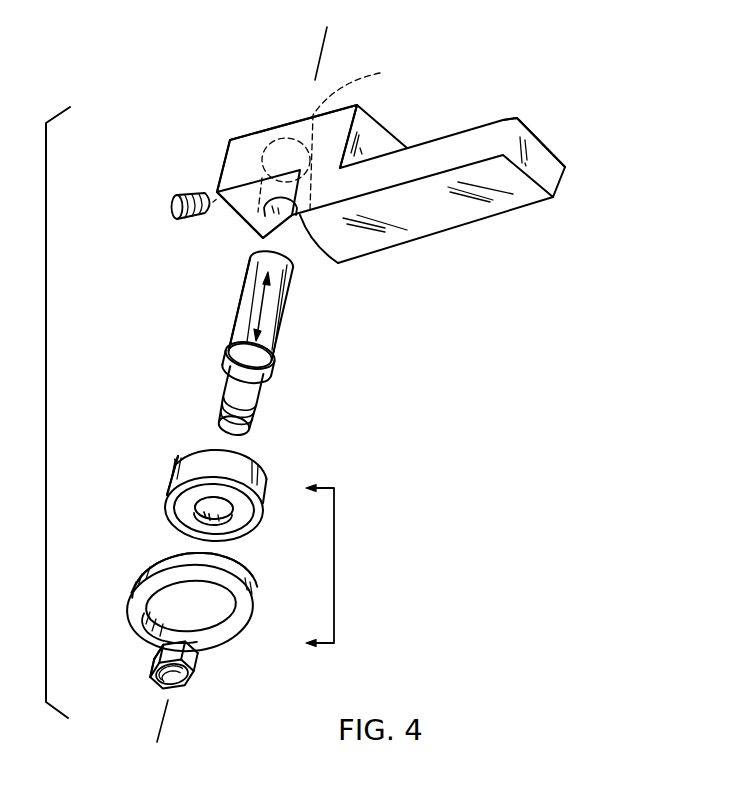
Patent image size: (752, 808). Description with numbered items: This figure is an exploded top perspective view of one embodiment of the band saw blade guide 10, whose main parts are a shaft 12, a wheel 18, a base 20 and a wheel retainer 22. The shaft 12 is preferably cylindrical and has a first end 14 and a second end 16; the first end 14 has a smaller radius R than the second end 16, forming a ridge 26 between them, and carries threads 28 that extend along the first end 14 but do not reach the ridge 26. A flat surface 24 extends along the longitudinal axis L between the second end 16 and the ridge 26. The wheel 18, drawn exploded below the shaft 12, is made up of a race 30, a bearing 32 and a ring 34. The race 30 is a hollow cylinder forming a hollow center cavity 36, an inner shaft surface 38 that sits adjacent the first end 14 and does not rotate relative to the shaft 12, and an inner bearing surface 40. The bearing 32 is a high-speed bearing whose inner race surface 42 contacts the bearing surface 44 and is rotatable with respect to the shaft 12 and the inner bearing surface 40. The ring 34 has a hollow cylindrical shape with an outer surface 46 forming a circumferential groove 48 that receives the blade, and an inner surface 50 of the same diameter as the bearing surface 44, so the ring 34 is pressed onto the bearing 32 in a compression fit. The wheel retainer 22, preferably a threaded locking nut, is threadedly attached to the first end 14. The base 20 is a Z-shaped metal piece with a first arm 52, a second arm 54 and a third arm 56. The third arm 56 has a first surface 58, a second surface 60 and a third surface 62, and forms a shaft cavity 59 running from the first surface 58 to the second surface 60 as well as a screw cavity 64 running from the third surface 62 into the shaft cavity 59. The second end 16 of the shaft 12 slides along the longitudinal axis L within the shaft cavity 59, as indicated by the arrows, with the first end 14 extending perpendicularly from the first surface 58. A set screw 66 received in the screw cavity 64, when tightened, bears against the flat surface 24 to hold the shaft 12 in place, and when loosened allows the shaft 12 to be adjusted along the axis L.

The band saw blade guide 10 is at (483, 97).
The shaft 12 is at (285, 330).
The first end 14 is at (250, 422).
The second end 16 is at (250, 250).
The wheel 18 is at (337, 568).
The base 20 is at (467, 225).
The wheel retainer 22 is at (193, 683).
The flat surface 24 is at (237, 302).
The ridge 26 is at (277, 368).
The threads 28 is at (220, 403).
The race 30 is at (200, 505).
The bearing 32 is at (193, 490).
The ring 34 is at (242, 637).
The hollow center cavity 36 is at (262, 481).
The inner shaft surface 38 is at (180, 527).
The inner bearing surface 40 is at (233, 527).
The inner race surface 42 is at (237, 510).
The bearing surface 44 is at (197, 462).
The outer surface 46 is at (242, 577).
The groove 48 is at (147, 567).
The inner surface 50 is at (148, 637).
The first arm 52 is at (513, 118).
The second arm 54 is at (367, 137).
The third arm 56 is at (245, 137).
The first surface 58 is at (240, 213).
The shaft cavity 59 is at (364, 133).
The second surface 60 is at (264, 140).
The third surface 62 is at (223, 150).
The screw cavity 64 is at (262, 170).
The set screw 66 is at (167, 216).
The longitudinal axis L is at (327, 42).
The radius R is at (228, 421).